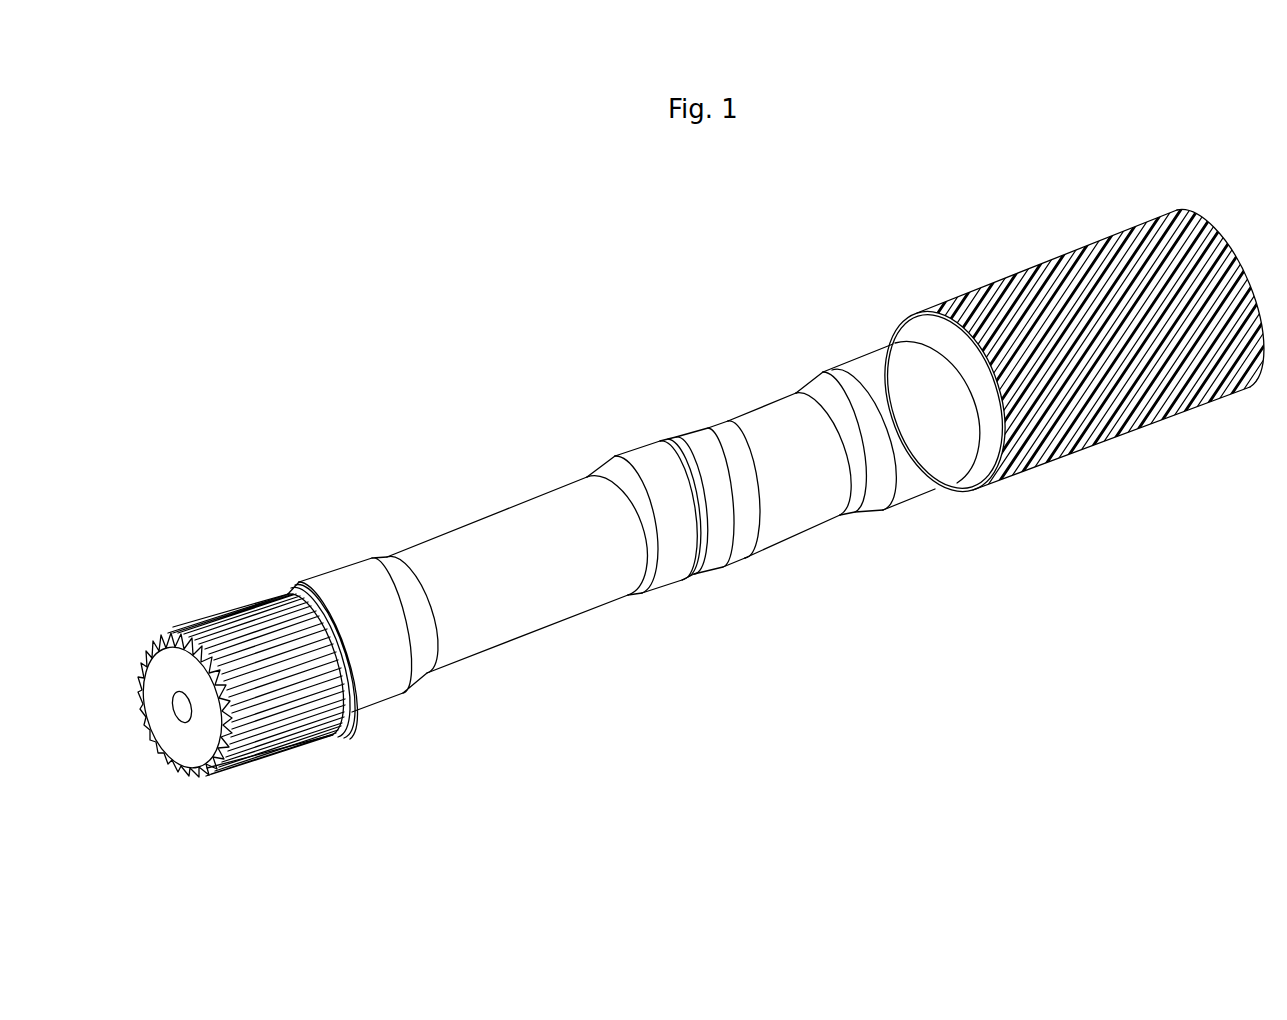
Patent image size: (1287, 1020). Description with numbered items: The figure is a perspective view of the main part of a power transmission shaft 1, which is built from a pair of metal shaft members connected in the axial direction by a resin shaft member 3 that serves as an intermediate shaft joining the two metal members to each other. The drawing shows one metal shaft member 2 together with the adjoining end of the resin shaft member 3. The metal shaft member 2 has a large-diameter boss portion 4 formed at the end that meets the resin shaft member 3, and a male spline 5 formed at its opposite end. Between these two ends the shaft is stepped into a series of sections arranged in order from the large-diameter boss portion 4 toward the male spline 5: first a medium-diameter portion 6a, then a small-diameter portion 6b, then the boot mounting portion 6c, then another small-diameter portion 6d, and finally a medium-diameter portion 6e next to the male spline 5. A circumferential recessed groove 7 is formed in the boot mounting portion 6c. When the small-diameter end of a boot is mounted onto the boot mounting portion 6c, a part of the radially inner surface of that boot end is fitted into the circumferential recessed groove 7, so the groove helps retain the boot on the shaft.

The power transmission shaft 1 is at (760, 348).
The metal shaft member 2 is at (559, 626).
The resin shaft member 3 is at (1103, 447).
The large-diameter boss portion 4 is at (909, 331).
The male spline 5 is at (242, 609).
The medium-diameter portion 6a is at (920, 465).
The small-diameter portion 6b is at (807, 500).
The boot mounting portion 6c is at (656, 452).
The small-diameter portion 6d is at (500, 535).
The medium-diameter portion 6e is at (385, 681).
The circumferential recessed groove 7 is at (698, 468).